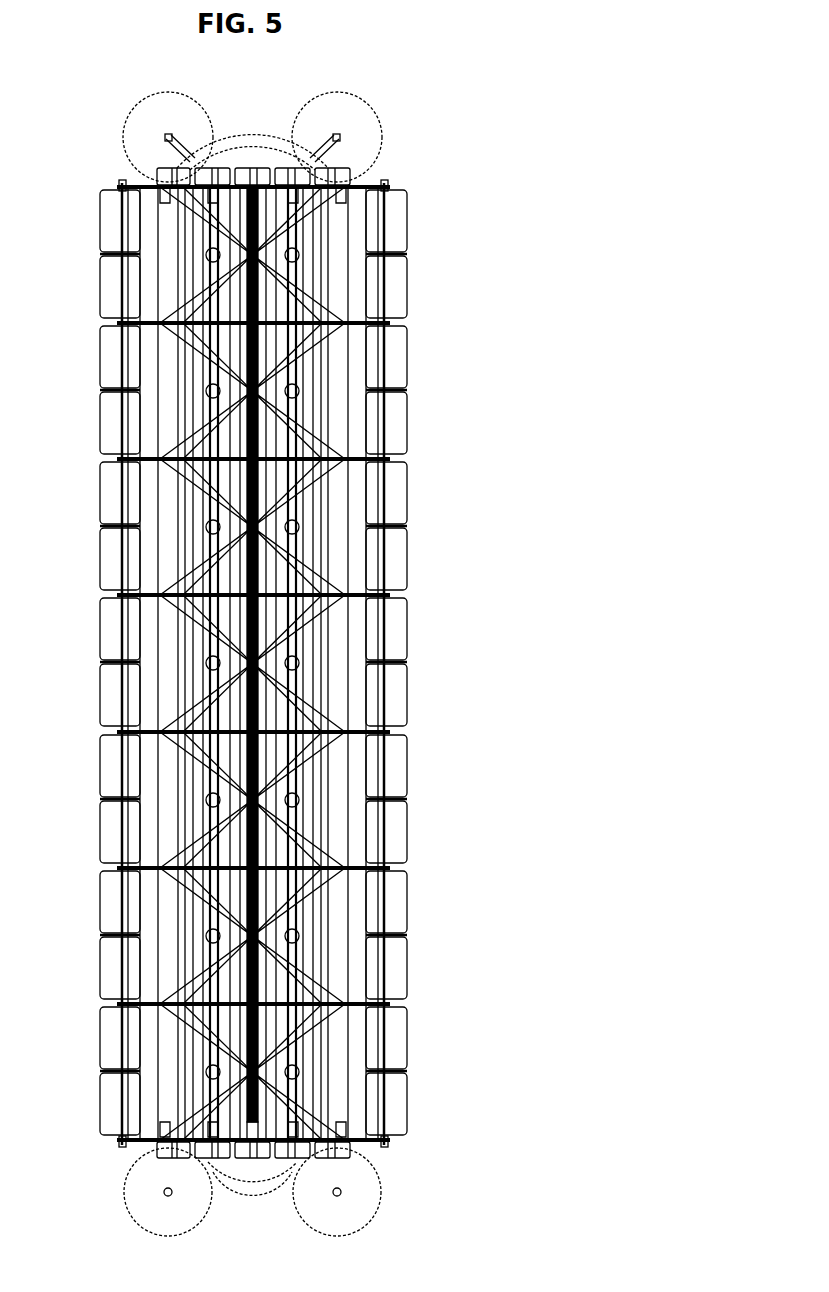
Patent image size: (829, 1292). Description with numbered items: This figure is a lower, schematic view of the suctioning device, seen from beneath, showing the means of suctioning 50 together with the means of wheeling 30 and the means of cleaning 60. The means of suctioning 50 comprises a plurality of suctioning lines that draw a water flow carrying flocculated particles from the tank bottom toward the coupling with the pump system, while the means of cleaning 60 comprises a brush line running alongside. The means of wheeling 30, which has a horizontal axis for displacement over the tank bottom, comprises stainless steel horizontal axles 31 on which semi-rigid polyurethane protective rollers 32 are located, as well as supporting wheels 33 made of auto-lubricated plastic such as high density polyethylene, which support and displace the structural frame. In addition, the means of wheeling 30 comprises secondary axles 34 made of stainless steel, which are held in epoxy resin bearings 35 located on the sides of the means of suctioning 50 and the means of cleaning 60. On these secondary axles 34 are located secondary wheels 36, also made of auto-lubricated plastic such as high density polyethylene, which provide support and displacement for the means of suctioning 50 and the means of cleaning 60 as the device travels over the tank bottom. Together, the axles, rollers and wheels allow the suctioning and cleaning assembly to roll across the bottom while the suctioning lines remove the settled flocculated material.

The means of wheeling 30 is at (407, 272).
The horizontal axles 31 is at (383, 825).
The protective rollers 32 is at (393, 913).
The supporting wheels 33 is at (398, 968).
The secondary axles 34 is at (313, 1150).
The epoxy resin bearings 35 is at (212, 1130).
The secondary wheels 36 is at (158, 1146).
The means of suctioning 50 is at (298, 524).
The means of cleaning 60 is at (258, 690).